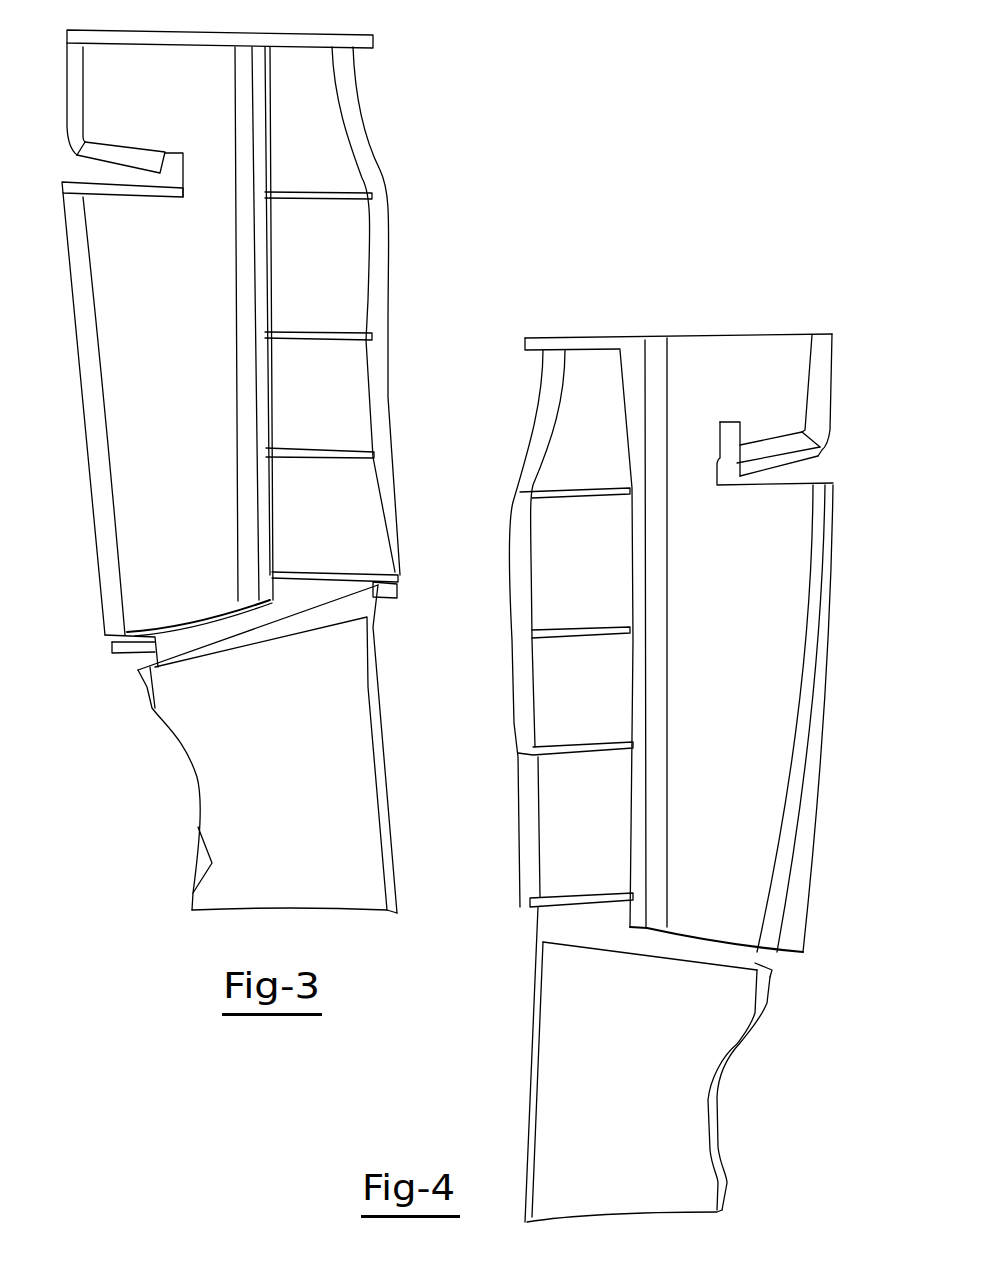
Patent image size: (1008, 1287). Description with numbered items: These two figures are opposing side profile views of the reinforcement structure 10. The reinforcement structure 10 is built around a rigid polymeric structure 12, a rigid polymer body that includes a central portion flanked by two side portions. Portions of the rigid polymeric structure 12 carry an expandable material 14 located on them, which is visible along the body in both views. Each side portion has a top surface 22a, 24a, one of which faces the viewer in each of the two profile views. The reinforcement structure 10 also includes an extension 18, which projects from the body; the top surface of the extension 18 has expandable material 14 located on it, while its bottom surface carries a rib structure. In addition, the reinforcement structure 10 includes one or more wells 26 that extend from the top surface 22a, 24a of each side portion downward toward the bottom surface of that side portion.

In FIG. 3, the reinforcement structure 10 is at (385, 105).
In FIG. 4, the reinforcement structure 10 is at (512, 384).
In FIG. 3, the rigid polymeric structure 12 is at (330, 301).
In FIG. 4, the rigid polymeric structure 12 is at (595, 697).
In FIG. 3, the expandable material 14 is at (180, 322).
In FIG. 4, the expandable material 14 is at (738, 719).
In FIG. 3, the extension 18 is at (257, 847).
In FIG. 4, the extension 18 is at (697, 1075).
In FIG. 4, the top surface of side portion 22a is at (768, 755).
In FIG. 3, the top surface of side portion 24a is at (168, 465).
In FIG. 3, the well 26 is at (122, 175).
In FIG. 4, the well 26 is at (783, 477).